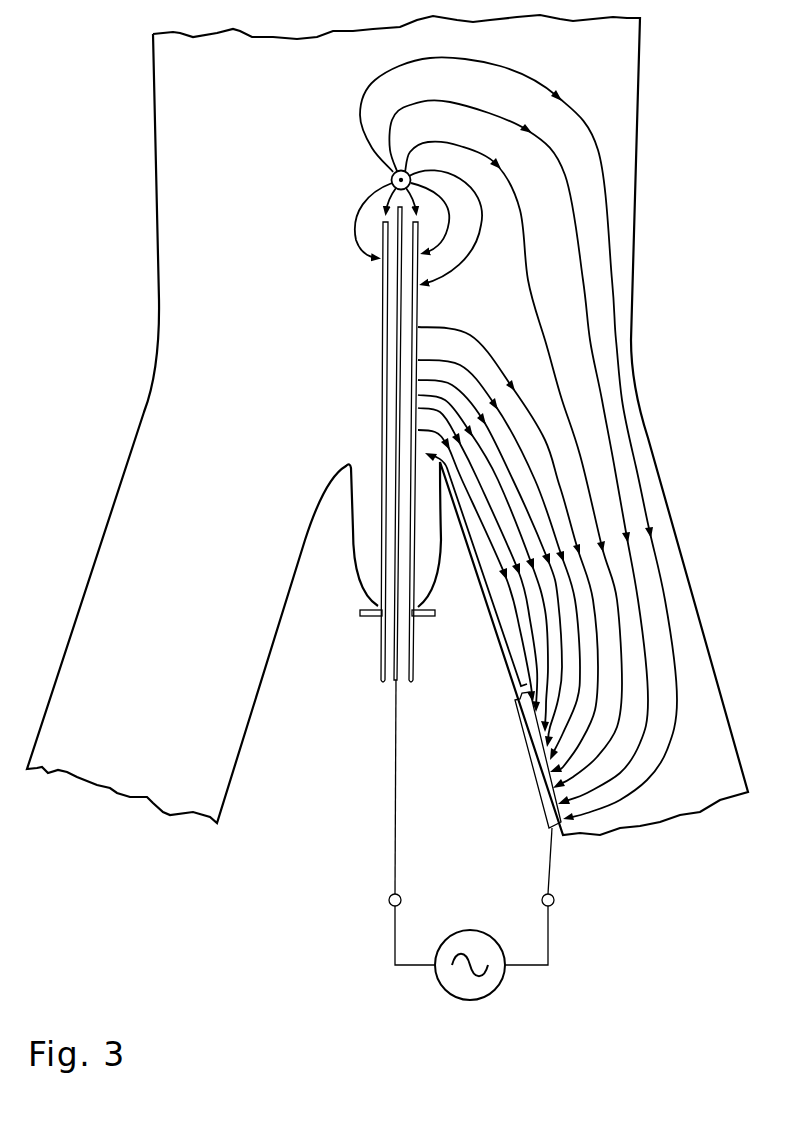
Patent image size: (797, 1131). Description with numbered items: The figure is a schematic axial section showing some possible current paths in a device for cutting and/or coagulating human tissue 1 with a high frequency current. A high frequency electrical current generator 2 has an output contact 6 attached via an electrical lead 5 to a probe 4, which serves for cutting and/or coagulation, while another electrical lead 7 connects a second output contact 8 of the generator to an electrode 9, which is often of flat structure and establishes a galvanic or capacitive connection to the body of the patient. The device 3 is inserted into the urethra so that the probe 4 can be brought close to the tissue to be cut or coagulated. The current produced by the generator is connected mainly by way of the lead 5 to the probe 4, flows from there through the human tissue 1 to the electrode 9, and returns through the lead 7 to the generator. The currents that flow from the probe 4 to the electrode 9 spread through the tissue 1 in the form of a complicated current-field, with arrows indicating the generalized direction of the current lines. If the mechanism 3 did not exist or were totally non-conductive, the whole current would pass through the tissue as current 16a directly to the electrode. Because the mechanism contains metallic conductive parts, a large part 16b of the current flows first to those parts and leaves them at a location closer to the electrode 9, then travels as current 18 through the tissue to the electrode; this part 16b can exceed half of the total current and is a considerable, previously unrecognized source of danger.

The human tissue 1 is at (387, 425).
The high frequency electrical current generator 2 is at (471, 975).
The device 3 is at (395, 452).
The probe 4 is at (389, 179).
The electrical lead 5 is at (386, 550).
The output contact 6 is at (381, 901).
The electrical lead 7 is at (559, 861).
The second output contact 8 is at (560, 901).
The electrode 9 is at (533, 760).
The high frequency current 16a is at (518, 438).
The high frequency current 16b is at (418, 227).
The current 18 is at (508, 549).